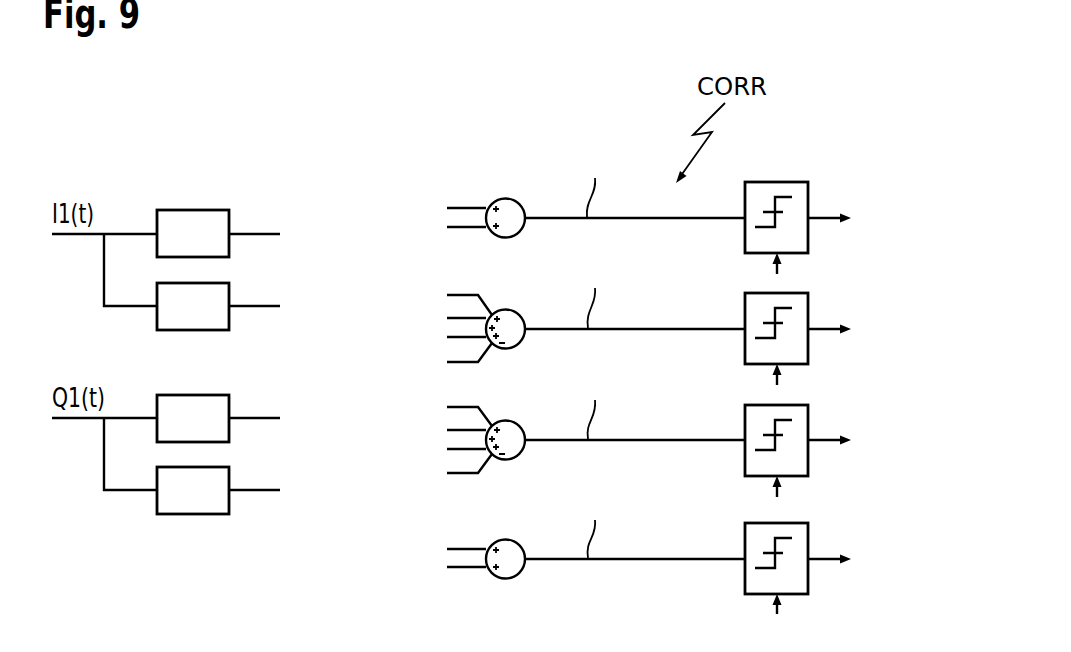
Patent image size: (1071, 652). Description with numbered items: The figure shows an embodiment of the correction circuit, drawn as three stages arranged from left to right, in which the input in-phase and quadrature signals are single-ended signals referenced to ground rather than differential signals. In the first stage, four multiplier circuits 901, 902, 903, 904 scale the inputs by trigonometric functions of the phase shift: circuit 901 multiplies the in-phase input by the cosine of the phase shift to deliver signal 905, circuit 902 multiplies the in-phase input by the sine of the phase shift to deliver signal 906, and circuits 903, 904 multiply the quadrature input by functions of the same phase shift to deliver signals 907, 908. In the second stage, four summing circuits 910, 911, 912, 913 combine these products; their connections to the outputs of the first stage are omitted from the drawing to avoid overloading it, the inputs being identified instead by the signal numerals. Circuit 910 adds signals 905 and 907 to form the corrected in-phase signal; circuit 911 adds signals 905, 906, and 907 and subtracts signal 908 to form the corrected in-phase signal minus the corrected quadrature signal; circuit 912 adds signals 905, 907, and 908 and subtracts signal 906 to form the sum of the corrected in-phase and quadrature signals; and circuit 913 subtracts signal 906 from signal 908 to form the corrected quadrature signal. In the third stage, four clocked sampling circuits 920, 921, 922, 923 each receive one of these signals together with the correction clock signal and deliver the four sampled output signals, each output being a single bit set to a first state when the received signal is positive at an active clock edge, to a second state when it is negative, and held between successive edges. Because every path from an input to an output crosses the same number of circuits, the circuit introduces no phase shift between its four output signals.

The multiplier circuit 901 is at (172, 248).
The multiplier circuit 902 is at (172, 322).
The multiplier circuit 903 is at (172, 434).
The multiplier circuit 904 is at (172, 506).
The signal 905 is at (255, 233).
The signal 906 is at (255, 305).
The signal 907 is at (255, 417).
The signal 908 is at (255, 489).
The summing circuit 910 is at (456, 208).
The summing circuit 911 is at (456, 295).
The summing circuit 912 is at (456, 407).
The summing circuit 913 is at (456, 549).
The one-bit sampling circuit 920 is at (797, 190).
The one-bit sampling circuit 921 is at (797, 301).
The one-bit sampling circuit 922 is at (797, 413).
The one-bit sampling circuit 923 is at (797, 531).